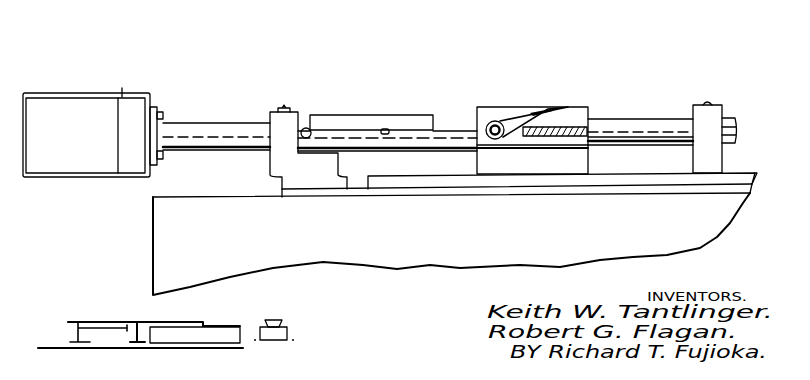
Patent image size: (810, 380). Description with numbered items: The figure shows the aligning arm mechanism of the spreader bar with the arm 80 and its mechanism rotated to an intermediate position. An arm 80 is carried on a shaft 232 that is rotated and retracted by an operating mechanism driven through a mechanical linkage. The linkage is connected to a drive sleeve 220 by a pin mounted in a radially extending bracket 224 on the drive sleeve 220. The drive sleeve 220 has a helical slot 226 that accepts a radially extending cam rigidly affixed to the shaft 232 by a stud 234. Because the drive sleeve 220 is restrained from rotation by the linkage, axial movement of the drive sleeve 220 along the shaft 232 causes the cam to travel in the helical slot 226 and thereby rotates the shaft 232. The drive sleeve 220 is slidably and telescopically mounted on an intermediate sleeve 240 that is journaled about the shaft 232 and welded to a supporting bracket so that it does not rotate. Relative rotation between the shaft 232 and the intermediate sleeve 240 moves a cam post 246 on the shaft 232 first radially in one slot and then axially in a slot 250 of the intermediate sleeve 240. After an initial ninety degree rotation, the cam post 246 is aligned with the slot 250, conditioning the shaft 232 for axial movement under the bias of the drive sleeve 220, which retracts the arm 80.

The rotatable and retractable arm 80 is at (99, 89).
The shaft 232 is at (215, 117).
The intermediate sleeve 240 is at (360, 111).
The cam post 246 is at (311, 128).
The axial slot 250 is at (392, 130).
The drive sleeve 220 is at (509, 101).
The stud 234 is at (493, 118).
The helical slot 226 is at (510, 131).
The radially extending bracket 224 is at (576, 122).